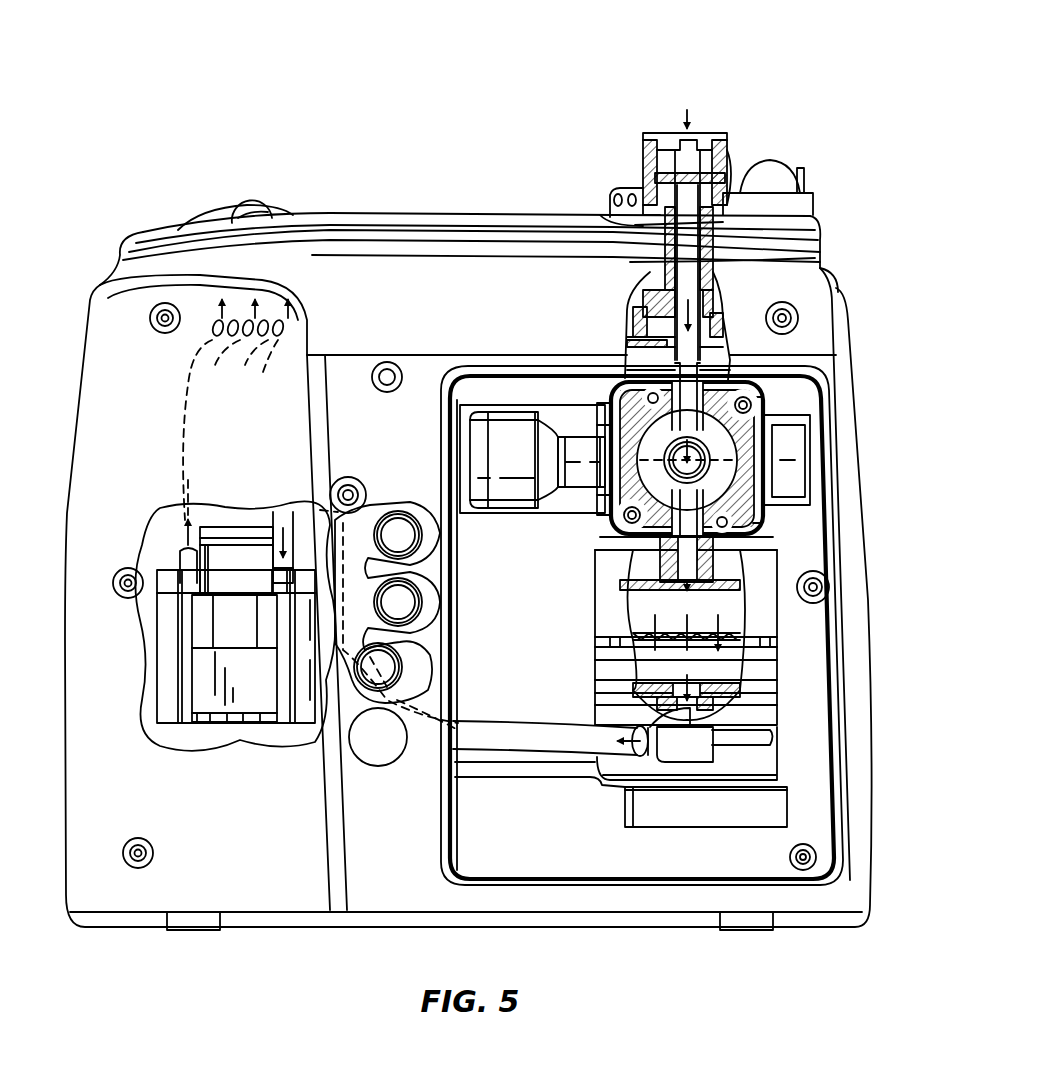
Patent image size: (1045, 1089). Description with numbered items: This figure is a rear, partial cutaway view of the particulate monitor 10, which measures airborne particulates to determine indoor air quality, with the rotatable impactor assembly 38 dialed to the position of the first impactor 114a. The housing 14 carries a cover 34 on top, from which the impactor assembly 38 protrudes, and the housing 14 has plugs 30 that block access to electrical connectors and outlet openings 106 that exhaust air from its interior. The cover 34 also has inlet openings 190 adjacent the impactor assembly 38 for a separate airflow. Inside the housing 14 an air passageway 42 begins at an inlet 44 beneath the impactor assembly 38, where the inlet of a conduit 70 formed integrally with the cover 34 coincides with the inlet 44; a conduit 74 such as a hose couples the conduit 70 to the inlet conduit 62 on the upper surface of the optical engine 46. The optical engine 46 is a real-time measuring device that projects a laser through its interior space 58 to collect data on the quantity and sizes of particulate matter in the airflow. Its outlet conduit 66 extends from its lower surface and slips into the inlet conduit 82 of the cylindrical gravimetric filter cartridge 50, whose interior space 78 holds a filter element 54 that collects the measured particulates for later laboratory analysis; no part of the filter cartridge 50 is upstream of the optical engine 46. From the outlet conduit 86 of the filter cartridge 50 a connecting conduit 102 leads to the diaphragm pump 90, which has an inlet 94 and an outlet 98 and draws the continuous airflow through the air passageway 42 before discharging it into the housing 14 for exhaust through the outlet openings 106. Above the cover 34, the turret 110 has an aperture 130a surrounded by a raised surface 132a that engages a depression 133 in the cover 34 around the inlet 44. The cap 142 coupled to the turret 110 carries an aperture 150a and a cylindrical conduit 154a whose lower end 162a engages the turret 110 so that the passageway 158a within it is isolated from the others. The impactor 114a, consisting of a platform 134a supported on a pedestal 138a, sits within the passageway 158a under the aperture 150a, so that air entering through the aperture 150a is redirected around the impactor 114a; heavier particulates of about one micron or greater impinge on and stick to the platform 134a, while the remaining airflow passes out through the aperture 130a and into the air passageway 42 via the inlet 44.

The monitor 10 is at (448, 95).
The housing 14 is at (87, 363).
The plugs 30 is at (398, 530).
The cover 34 is at (435, 210).
The rotatable impactor assembly 38 is at (815, 72).
The air passageway 42 is at (745, 380).
The inlet 44 is at (645, 295).
The optical engine 46 is at (770, 397).
The filter cartridge 50 is at (770, 570).
The filter element 54 is at (735, 630).
The interior space 58 is at (735, 450).
The inlet conduit 62 is at (735, 375).
The outlet conduit 66 is at (760, 545).
The conduit 70 is at (665, 280).
The conduit 74 is at (690, 350).
The interior space 78 is at (630, 607).
The inlet conduit 82 is at (630, 575).
The outlet conduit 86 is at (735, 700).
The diaphragm pump 90 is at (165, 680).
The inlet 94 is at (276, 580).
The outlet 98 is at (182, 560).
The connecting conduit 102 is at (530, 745).
The outlet openings 106 is at (290, 330).
The turret 110 is at (617, 213).
The impactor 114a is at (643, 185).
The aperture 130a is at (770, 232).
The raised surface 132a is at (663, 260).
The depression 133 is at (800, 260).
The platform 134a is at (705, 170).
The pedestal 138a is at (727, 195).
The cap 142 is at (805, 178).
The aperture 150a is at (680, 140).
The conduit 154a is at (650, 148).
The passageway 158a is at (657, 180).
The lower end 162a is at (770, 215).
The inlet openings 190 is at (620, 192).